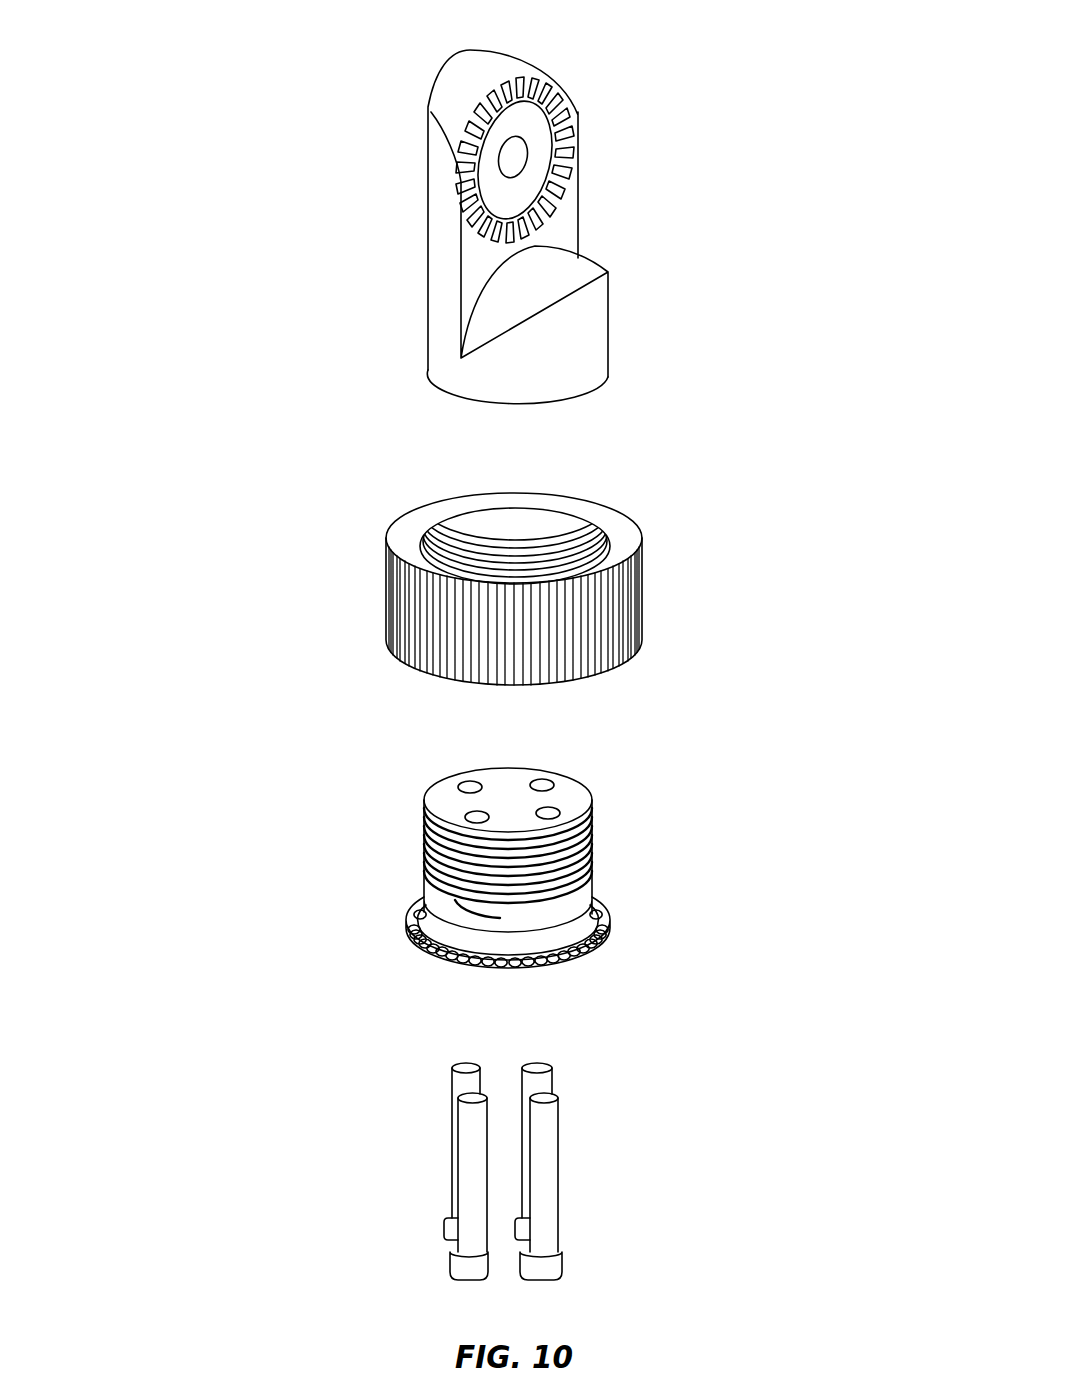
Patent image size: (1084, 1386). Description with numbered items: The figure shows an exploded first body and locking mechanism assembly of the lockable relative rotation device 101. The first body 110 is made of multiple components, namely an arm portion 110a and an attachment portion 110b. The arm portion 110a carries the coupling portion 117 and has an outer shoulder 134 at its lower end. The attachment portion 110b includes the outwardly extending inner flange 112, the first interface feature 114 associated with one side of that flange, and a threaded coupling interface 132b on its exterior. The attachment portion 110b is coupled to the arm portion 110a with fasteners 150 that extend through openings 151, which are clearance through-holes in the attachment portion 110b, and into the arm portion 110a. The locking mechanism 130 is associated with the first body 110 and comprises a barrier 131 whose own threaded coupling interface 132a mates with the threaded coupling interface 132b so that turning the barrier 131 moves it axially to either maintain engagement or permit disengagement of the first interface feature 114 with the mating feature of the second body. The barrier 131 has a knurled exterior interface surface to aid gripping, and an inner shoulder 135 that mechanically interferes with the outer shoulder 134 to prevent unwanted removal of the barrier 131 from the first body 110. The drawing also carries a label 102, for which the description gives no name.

The assembly 102 is at (342, 35).
The first body 110 is at (379, 835).
The arm portion 110a is at (590, 323).
The coupling portion 117 is at (573, 147).
The outer shoulder 134 is at (568, 402).
The lockable relative rotation device 101 is at (738, 467).
The locking mechanism 130 is at (402, 497).
The barrier 131 is at (409, 566).
The threaded coupling interface 132a is at (527, 547).
The inner shoulder 135 is at (590, 558).
The attachment portion 110b is at (580, 787).
The openings 151 is at (558, 810).
The threaded coupling interface 132b is at (590, 845).
The first interface feature 114 is at (603, 925).
The inner flange 112 is at (595, 948).
The fasteners 150 is at (545, 1197).